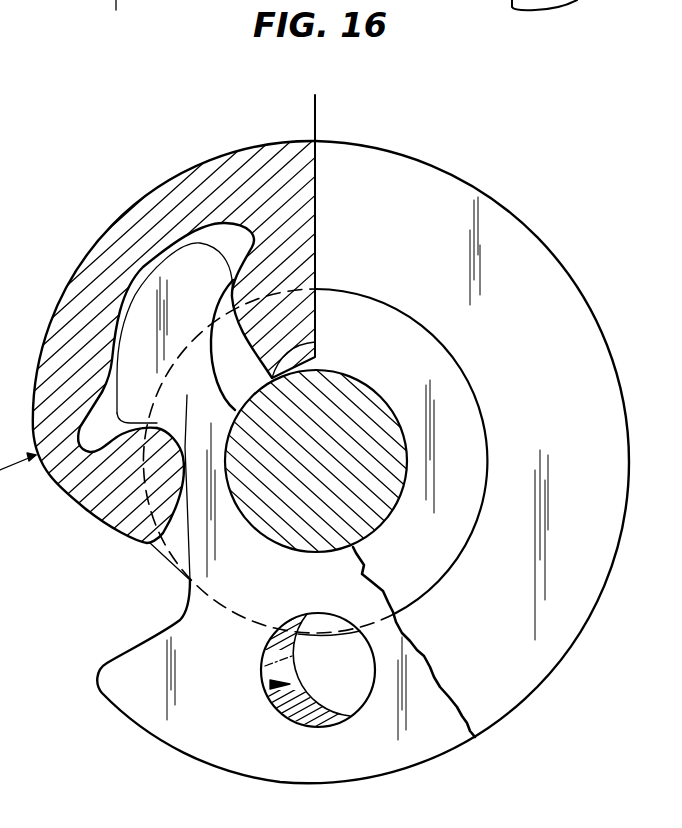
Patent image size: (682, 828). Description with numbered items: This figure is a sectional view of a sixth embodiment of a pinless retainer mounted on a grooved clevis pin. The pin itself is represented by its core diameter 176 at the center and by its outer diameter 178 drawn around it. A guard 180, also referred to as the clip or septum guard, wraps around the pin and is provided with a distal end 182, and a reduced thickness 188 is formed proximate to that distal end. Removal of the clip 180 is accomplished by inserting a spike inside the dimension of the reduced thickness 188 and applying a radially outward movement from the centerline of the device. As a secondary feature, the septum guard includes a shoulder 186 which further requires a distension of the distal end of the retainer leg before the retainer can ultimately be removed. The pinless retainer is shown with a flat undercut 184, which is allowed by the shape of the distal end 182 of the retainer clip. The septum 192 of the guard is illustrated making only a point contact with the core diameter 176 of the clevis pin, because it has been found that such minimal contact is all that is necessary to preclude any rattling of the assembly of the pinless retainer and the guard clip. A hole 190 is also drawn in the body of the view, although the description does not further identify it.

The core diameter of grooved clevis pin 176 is at (340, 477).
The outer diameter of the pin 178 is at (488, 449).
The guard 180 is at (263, 172).
The distal end 182 is at (107, 512).
The flat undercut 184 is at (163, 416).
The shoulder 186 is at (258, 273).
The reduced thickness 188 is at (110, 427).
The pin hole 190 is at (265, 690).
The septum 192 is at (316, 339).